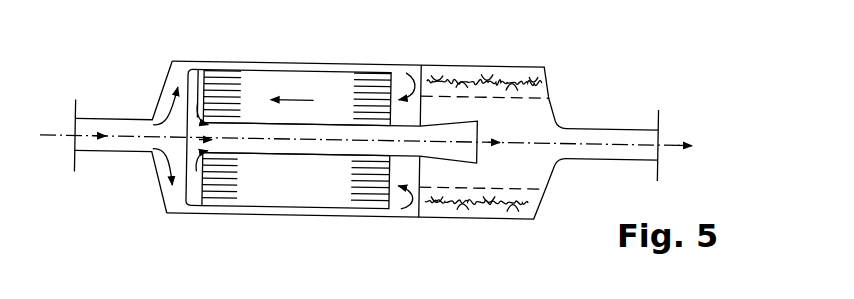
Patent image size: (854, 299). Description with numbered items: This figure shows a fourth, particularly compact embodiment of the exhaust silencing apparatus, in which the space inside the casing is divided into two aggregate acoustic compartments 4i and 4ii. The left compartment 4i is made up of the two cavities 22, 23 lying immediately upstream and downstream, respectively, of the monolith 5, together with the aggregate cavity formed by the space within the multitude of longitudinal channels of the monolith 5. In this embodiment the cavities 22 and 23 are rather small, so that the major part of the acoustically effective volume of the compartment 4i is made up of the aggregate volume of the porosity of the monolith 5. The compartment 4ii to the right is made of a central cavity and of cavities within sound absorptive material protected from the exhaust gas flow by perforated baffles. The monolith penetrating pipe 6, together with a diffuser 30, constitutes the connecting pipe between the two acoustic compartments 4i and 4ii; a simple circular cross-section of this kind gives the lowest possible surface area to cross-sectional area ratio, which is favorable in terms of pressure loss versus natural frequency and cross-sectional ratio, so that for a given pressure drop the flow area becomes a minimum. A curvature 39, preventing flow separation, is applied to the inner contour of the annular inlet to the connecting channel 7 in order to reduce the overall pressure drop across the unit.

The curvature 39 is at (170, 81).
The cavity 23 is at (197, 82).
The monolith 5 is at (249, 85).
The connecting channel 7 is at (292, 68).
The monolith penetrating pipe 6 is at (327, 128).
The cavity 22 is at (409, 77).
The diffuser 30 is at (468, 128).
The acoustic compartment 4i is at (398, 194).
The acoustic compartment 4ii is at (530, 170).